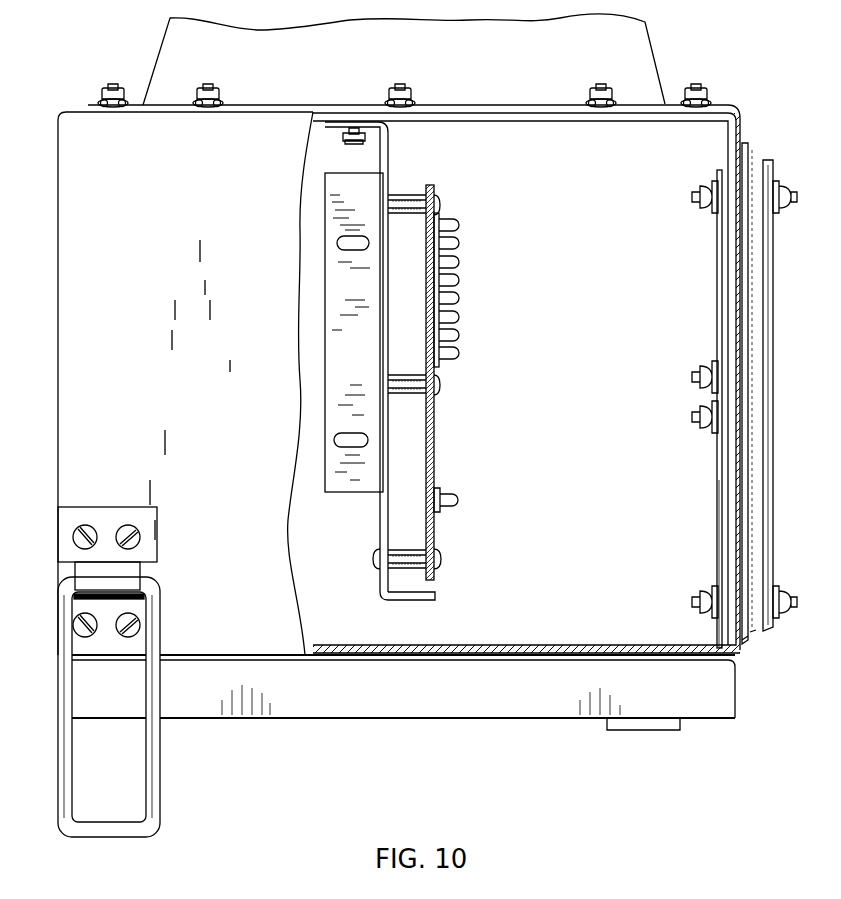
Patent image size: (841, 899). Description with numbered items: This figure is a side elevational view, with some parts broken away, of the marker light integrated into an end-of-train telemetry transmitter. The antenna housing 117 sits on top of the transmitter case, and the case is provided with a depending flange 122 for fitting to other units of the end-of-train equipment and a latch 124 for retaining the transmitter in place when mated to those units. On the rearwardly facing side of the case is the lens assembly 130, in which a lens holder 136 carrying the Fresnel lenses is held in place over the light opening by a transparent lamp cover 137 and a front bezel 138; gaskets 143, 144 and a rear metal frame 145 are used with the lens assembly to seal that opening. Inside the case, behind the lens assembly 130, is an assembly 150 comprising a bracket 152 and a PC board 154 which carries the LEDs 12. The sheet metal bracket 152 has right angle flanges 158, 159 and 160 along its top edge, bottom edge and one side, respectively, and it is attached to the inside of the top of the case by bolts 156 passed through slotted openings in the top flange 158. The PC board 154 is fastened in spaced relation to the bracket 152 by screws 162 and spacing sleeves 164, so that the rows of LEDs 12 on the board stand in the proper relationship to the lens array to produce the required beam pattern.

The antenna housing 117 is at (407, 58).
The gasket 143 is at (740, 114).
The lens holder 136 is at (746, 143).
The lens assembly 130 is at (781, 391).
The gasket 144 is at (717, 168).
The rear metal frame 145 is at (717, 495).
The bolt 156 is at (353, 141).
The right angle flange 158 is at (389, 158).
The assembly 150 is at (483, 349).
The LED 12 is at (462, 346).
The right angle flange 160 is at (325, 300).
The bracket 152 is at (380, 508).
The spacing sleeve 164 is at (404, 549).
The PC board 154 is at (434, 530).
The screw 162 is at (442, 560).
The right angle flange 159 is at (432, 600).
The front bezel 138 is at (770, 628).
The transparent lamp cover 137 is at (757, 632).
The latch 124 is at (58, 726).
The depending flange 122 is at (490, 720).